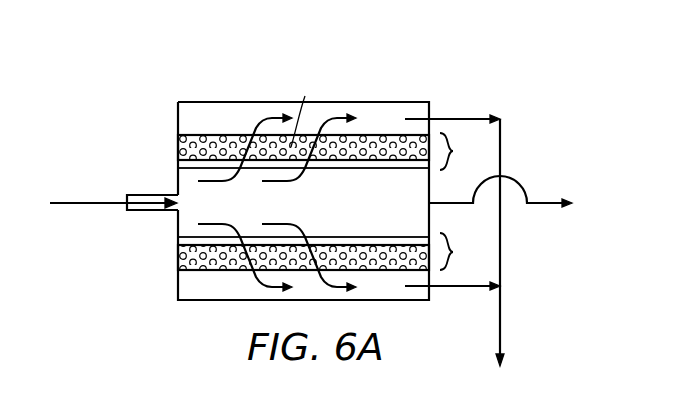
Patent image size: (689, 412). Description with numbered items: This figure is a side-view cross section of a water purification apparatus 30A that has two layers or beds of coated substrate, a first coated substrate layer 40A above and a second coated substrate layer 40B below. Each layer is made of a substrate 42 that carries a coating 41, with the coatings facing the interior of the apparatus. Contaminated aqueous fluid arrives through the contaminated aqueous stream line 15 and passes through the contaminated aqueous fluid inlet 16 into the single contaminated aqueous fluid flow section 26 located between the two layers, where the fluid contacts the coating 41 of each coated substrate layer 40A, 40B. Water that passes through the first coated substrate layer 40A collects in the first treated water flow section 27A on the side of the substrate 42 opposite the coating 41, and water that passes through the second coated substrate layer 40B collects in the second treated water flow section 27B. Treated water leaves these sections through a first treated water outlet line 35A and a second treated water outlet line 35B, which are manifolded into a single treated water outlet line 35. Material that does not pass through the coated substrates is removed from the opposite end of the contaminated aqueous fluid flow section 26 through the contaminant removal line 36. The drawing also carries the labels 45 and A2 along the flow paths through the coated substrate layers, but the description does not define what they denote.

The water purification apparatus 30A is at (201, 46).
The contaminated aqueous stream line 15 is at (105, 200).
The contaminated aqueous fluid inlet 16 is at (172, 212).
The contaminated aqueous fluid flow section 26 is at (392, 213).
The first treated water flow section 27A is at (397, 128).
The second treated water flow section 27B is at (399, 296).
The treated water outlet line 35 is at (503, 254).
The first treated water outlet line 35A is at (455, 113).
The second treated water outlet line 35B is at (457, 290).
The contaminant removal line 36 is at (547, 206).
The first coated substrate layer 40A is at (467, 151).
The second coated substrate layer 40B is at (466, 251).
The coating 41 is at (178, 165).
The substrate 42 is at (178, 143).
The flow passage 45 is at (305, 96).
The air flow A2 is at (258, 126).